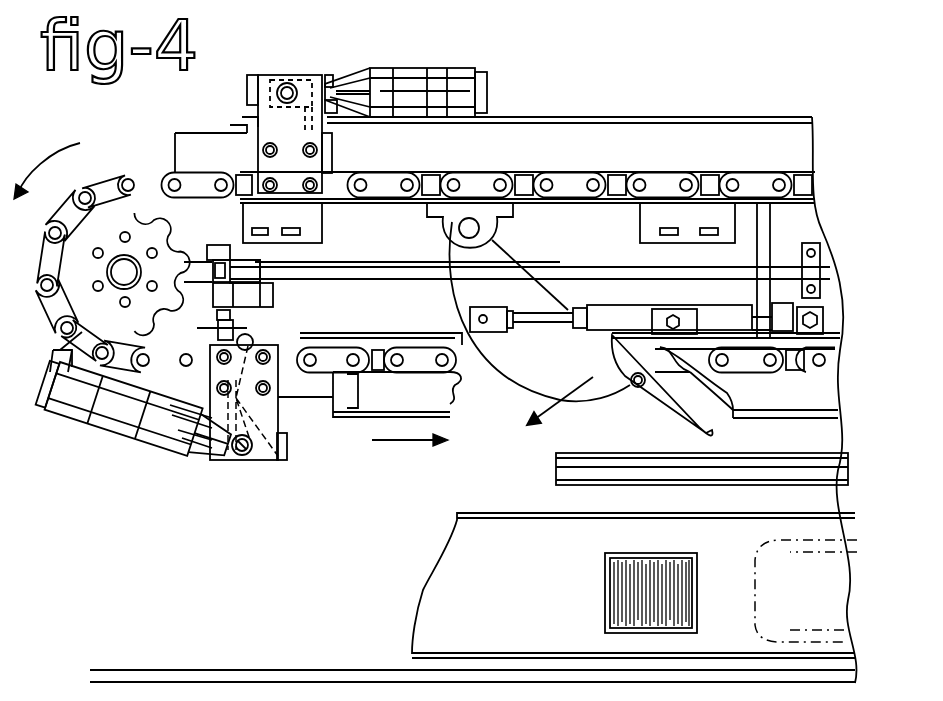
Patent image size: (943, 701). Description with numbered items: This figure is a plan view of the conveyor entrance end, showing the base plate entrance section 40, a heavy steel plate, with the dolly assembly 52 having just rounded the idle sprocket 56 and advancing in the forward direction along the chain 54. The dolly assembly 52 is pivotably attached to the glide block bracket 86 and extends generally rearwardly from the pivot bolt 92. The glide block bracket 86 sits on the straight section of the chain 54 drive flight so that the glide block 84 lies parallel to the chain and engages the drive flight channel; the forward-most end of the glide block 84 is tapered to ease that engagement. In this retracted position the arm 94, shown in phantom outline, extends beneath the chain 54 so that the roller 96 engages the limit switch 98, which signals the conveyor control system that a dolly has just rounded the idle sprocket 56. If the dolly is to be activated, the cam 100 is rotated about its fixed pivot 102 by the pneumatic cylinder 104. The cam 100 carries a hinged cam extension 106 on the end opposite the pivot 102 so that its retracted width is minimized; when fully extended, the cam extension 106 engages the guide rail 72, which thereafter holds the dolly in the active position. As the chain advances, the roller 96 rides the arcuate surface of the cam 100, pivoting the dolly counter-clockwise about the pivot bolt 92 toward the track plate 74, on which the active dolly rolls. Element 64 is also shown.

The base plate entrance section 40 is at (262, 560).
The dolly assembly 52 is at (123, 427).
The chain 54 is at (67, 343).
The idle sprocket 56 is at (105, 228).
The track rail 64 is at (440, 397).
The guide rail 72 is at (580, 488).
The track plate 74 is at (535, 594).
The glide block 84 is at (321, 397).
The glide block bracket 86 is at (270, 458).
The pivot bolt 92 is at (235, 447).
The arm 94 is at (278, 456).
The roller 96 is at (262, 342).
The limit switch 98 is at (205, 410).
The cam 100 is at (523, 340).
The fixed pivot 102 is at (468, 218).
The pneumatic cylinder 104 is at (612, 315).
The hinged cam extension 106 is at (712, 430).